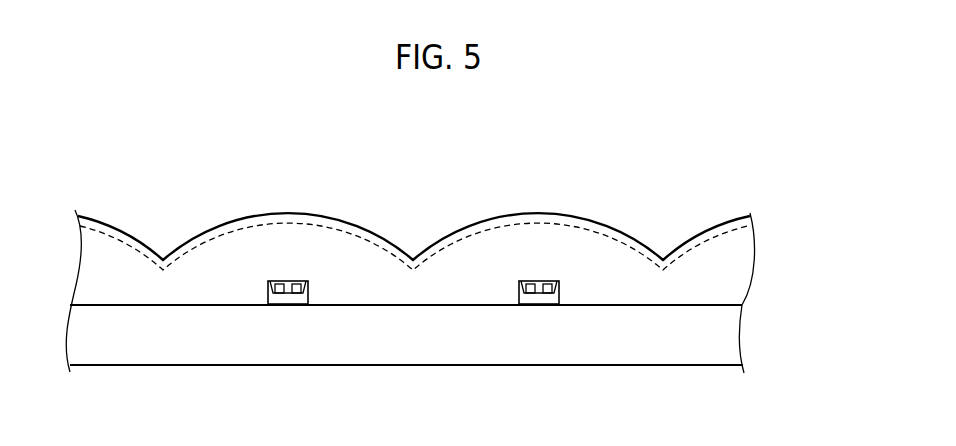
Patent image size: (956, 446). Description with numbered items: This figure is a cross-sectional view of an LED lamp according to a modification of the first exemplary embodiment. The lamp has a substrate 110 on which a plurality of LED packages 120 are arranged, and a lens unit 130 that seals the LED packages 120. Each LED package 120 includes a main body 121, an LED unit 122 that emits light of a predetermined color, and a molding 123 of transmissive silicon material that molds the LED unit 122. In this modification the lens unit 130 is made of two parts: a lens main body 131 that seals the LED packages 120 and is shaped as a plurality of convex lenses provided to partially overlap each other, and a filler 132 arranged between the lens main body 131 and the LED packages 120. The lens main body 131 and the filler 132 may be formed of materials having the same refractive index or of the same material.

The substrate 110 is at (723, 338).
The LED package 120 is at (413, 219).
The main body 121 is at (308, 292).
The LED unit 122 is at (296, 279).
The molding 123 is at (285, 280).
The lens unit 130 is at (414, 210).
The lens main body 131 is at (593, 213).
The filler 132 is at (618, 263).